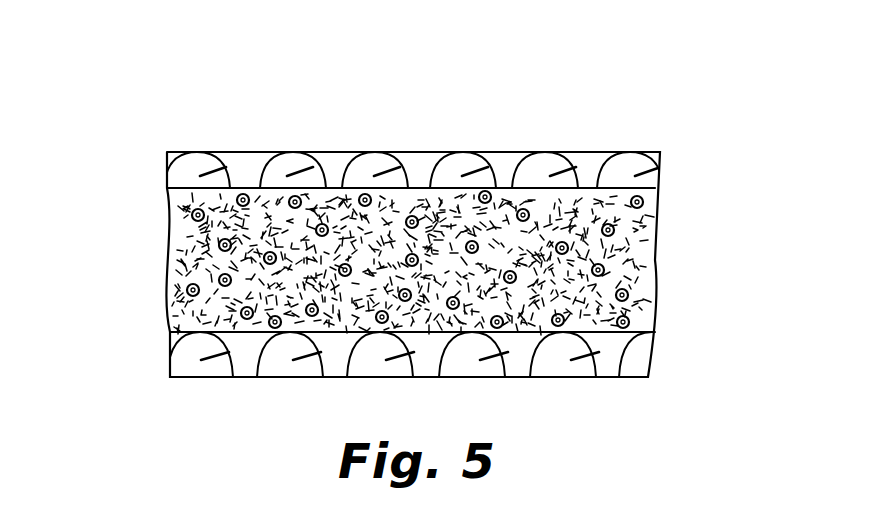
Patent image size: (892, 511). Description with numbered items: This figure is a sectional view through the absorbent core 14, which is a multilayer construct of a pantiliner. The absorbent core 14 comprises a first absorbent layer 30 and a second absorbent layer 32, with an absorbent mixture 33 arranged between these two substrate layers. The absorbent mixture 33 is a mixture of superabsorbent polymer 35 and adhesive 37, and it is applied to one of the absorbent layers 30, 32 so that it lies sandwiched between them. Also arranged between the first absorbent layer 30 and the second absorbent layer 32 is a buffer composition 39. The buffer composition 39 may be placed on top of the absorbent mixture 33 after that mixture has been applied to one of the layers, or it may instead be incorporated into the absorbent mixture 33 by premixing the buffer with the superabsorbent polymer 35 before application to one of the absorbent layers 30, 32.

The absorbent core 14 is at (597, 133).
The first absorbent layer 30 is at (418, 163).
The second absorbent layer 32 is at (273, 374).
The absorbent mixture 33 is at (175, 238).
The superabsorbent polymer 35 is at (548, 335).
The adhesive 37 is at (650, 312).
The buffer composition 39 is at (323, 224).